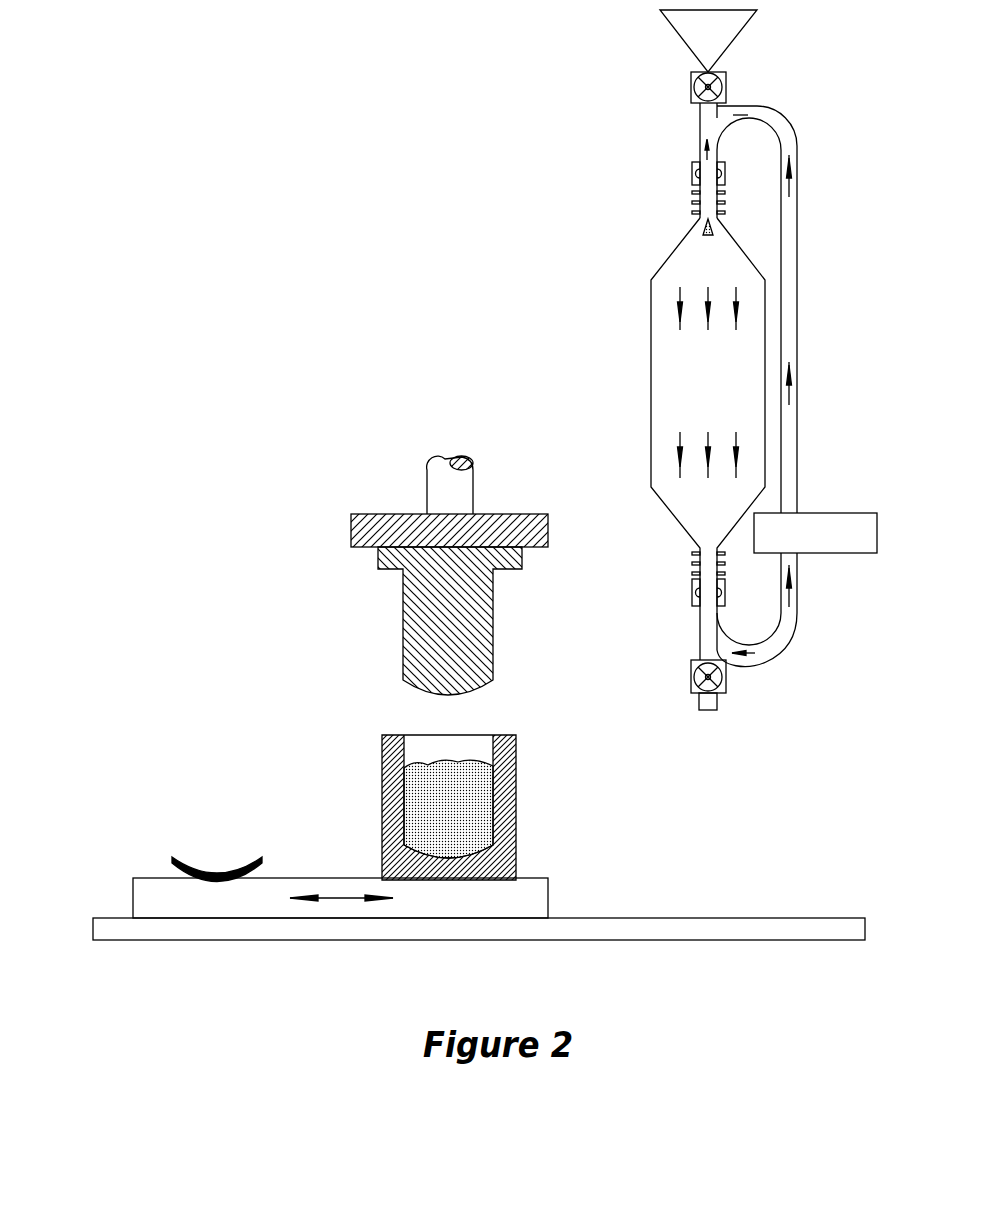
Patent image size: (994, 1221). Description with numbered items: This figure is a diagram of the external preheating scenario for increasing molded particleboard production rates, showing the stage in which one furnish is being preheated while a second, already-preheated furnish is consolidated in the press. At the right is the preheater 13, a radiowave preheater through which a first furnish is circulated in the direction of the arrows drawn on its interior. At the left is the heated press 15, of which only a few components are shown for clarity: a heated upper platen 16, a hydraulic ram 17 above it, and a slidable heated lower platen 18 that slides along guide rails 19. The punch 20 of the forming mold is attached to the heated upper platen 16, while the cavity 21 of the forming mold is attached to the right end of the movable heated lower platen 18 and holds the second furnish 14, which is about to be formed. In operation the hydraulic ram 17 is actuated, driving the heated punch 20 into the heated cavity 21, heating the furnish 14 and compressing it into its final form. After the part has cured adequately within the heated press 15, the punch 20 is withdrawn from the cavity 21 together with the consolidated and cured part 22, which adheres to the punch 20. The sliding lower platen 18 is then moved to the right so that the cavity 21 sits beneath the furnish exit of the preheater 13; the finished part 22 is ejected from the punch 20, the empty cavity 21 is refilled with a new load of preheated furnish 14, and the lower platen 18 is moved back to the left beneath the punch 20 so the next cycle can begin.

The preheater 13 is at (651, 311).
The furnish 14 is at (463, 807).
The heated press 15 is at (228, 681).
The heated upper platen 16 is at (351, 532).
The hydraulic ram 17 is at (427, 487).
The heated lower platen 18 is at (133, 893).
The guide rails 19 is at (93, 930).
The punch 20 is at (403, 629).
The cavity 21 is at (382, 791).
The cured part 22 is at (228, 870).